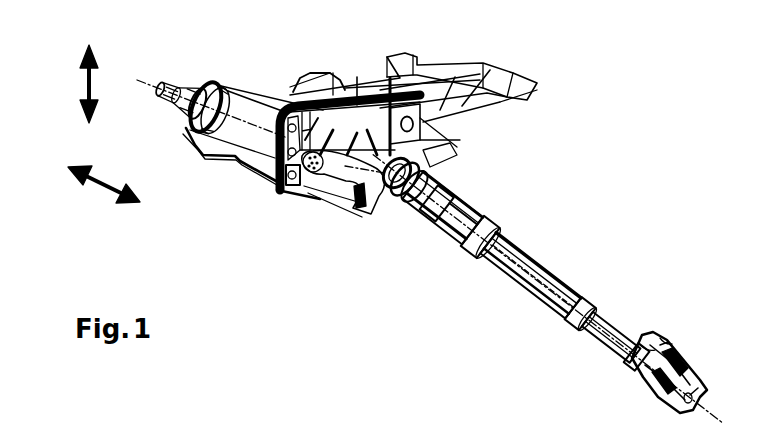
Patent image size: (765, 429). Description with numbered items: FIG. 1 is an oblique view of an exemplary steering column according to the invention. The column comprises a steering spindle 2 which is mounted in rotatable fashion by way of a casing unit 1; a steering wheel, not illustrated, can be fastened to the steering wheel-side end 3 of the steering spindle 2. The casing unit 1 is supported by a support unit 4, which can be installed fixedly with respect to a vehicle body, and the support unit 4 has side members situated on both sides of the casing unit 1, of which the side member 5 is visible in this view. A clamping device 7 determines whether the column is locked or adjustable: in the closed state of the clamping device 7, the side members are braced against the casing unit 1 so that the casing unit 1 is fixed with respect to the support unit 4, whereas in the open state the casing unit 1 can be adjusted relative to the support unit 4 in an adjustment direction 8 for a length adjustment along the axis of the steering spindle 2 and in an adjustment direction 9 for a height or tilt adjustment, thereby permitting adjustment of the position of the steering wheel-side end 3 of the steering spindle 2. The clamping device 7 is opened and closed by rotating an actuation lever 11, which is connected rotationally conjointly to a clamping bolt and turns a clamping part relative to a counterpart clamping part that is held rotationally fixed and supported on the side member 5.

The casing unit 1 is at (262, 86).
The steering spindle 2 is at (200, 82).
The steering wheel-side end 3 is at (172, 83).
The support unit 4 is at (385, 51).
The side member 5 is at (278, 193).
The clamping device 7 is at (321, 193).
The adjustment direction 8 is at (100, 183).
The adjustment direction 9 is at (85, 82).
The actuation lever 11 is at (351, 178).